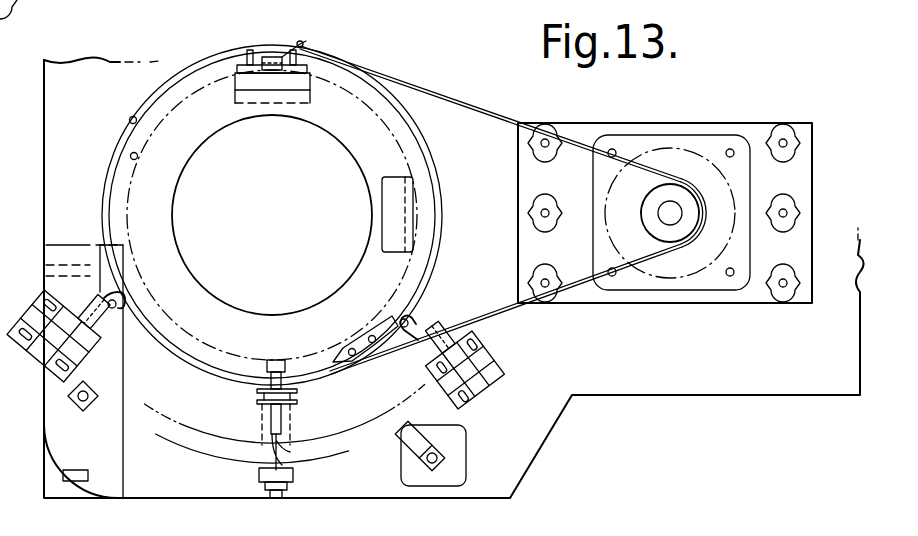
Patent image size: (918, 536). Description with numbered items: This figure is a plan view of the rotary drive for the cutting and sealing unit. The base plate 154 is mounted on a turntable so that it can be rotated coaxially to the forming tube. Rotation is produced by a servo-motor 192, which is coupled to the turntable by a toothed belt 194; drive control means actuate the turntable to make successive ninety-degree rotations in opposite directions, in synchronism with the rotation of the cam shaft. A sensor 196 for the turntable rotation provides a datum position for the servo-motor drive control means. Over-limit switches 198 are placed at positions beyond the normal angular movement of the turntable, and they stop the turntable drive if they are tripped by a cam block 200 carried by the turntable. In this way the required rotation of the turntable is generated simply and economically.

The base plate 154 is at (195, 108).
The toothed belt 194 is at (436, 96).
The servo-motor 192 is at (699, 153).
The over-limit switches 198 is at (103, 290).
The sensor 196 is at (258, 399).
The cam block 200 is at (368, 330).